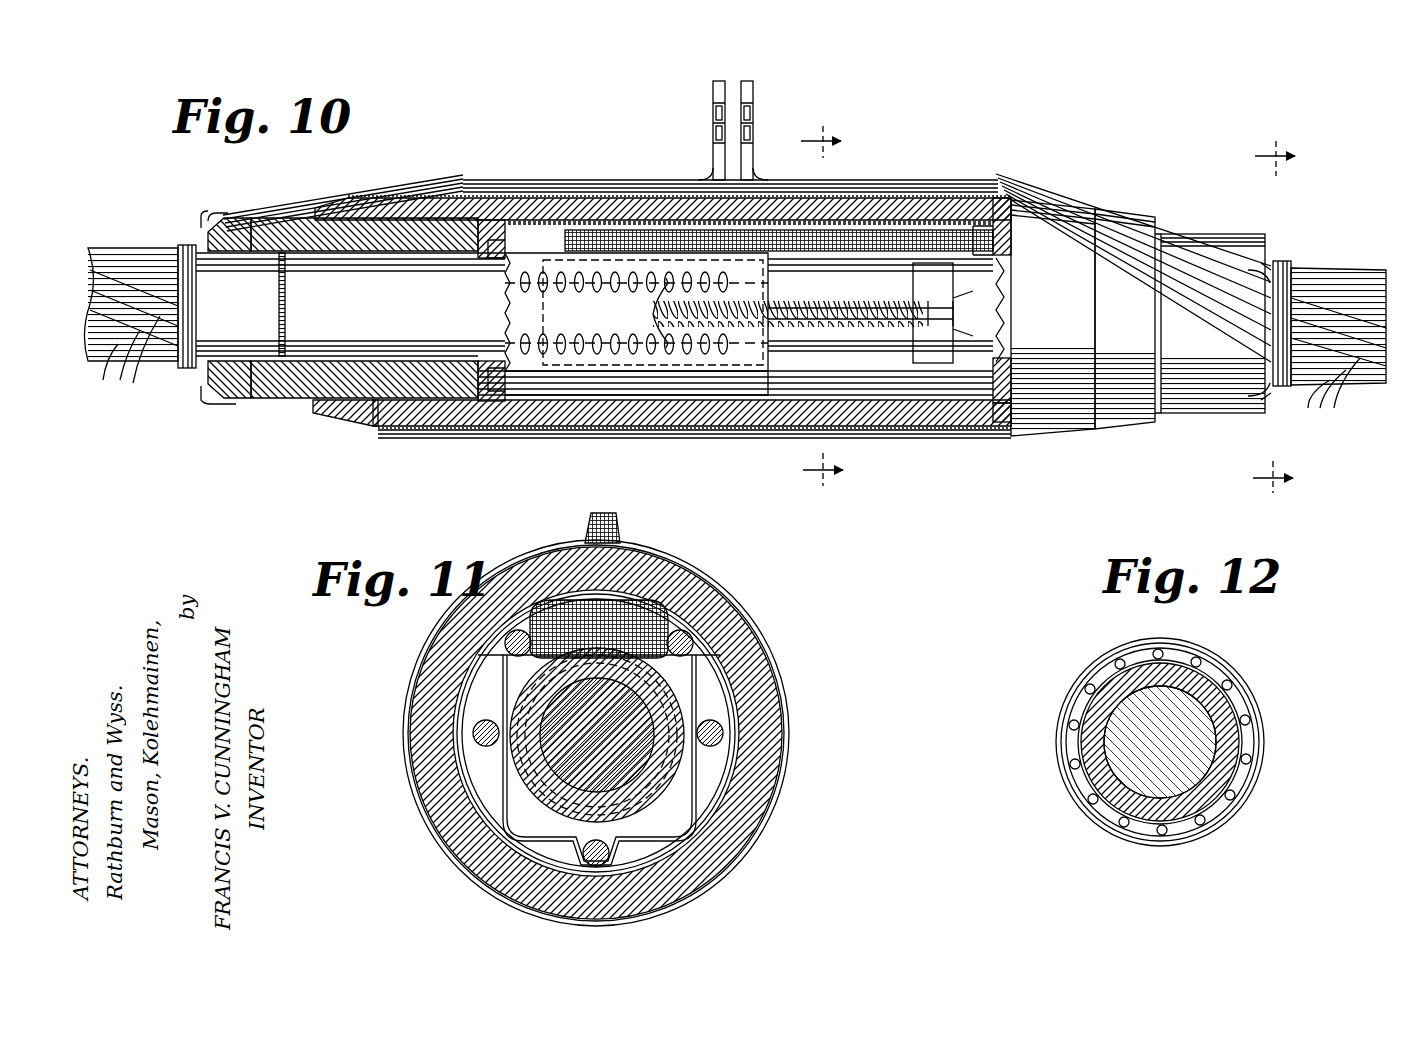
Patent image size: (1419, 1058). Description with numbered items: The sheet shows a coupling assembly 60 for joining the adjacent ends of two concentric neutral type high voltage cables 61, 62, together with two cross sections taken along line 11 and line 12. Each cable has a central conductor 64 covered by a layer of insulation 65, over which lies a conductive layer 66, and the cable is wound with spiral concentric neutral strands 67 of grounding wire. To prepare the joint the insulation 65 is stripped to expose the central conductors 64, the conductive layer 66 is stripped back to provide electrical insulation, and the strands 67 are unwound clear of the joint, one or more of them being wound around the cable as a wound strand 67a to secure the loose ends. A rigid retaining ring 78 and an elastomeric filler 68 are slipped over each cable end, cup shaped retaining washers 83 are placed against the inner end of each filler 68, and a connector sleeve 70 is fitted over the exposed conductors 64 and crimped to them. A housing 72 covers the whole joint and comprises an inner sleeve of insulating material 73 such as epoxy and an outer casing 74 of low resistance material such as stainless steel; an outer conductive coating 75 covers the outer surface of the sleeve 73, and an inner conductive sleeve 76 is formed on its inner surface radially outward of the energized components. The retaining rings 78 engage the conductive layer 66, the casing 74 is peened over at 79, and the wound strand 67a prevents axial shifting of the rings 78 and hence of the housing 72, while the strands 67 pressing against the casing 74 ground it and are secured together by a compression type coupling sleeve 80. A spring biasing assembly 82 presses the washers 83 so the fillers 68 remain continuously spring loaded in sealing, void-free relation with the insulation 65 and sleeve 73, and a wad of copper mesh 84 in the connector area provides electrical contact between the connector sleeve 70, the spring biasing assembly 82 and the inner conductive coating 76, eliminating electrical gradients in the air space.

In FIG. 10, the coupling assembly 60 is at (636, 101).
In FIG. 11, the coupling assembly 60 is at (366, 845).
In FIG. 10, the concentric neutral cable 61 is at (108, 236).
In FIG. 10, the concentric neutral cable 62 is at (1352, 262).
In FIG. 12, the concentric neutral cable 62 is at (1076, 806).
In FIG. 10, the central conductor 64 is at (580, 392).
In FIG. 11, the central conductor 64 is at (555, 770).
In FIG. 12, the central conductor 64 is at (1188, 782).
In FIG. 10, the insulation 65 is at (412, 372).
In FIG. 12, the insulation 65 is at (1110, 672).
In FIG. 10, the conductive layer 66 is at (252, 350).
In FIG. 12, the conductive layer 66 is at (1230, 692).
In FIG. 10, the concentric neutral strands 67 is at (721, 373).
In FIG. 11, the concentric neutral strands 67 is at (614, 526).
In FIG. 12, the concentric neutral strands 67 is at (1063, 755).
In FIG. 10, the wound strand 67a is at (180, 238).
In FIG. 12, the wound strand 67a is at (1180, 638).
In FIG. 10, the elastomeric filler 68 is at (338, 405).
In FIG. 10, the connector sleeve 70 is at (836, 365).
In FIG. 11, the connector sleeve 70 is at (606, 785).
In FIG. 10, the housing 72 is at (520, 420).
In FIG. 11, the housing 72 is at (462, 864).
In FIG. 10, the inner sleeve of insulating material 73 is at (488, 200).
In FIG. 11, the inner sleeve of insulating material 73 is at (754, 780).
In FIG. 10, the outer casing 74 is at (548, 176).
In FIG. 11, the outer casing 74 is at (781, 722).
In FIG. 10, the outer conductive coating 75 is at (660, 420).
In FIG. 11, the outer conductive coating 75 is at (726, 836).
In FIG. 10, the inner conductive sleeve 76 is at (718, 388).
In FIG. 11, the inner conductive sleeve 76 is at (610, 858).
In FIG. 10, the retaining ring 78 is at (222, 372).
In FIG. 10, the peened-over portion 79 is at (212, 205).
In FIG. 10, the coupling sleeve 80 is at (748, 112).
In FIG. 10, the spring biasing assembly 82 is at (615, 388).
In FIG. 11, the spring biasing assembly 82 is at (480, 683).
In FIG. 10, the retaining washer 83 is at (478, 215).
In FIG. 11, the retaining washer 83 is at (506, 893).
In FIG. 10, the wad of copper mesh 84 is at (868, 228).
In FIG. 11, the wad of copper mesh 84 is at (560, 600).
In FIG. 10, the section line 11- 11 is at (835, 314).
In FIG. 10, the section line 12- 12 is at (1287, 313).